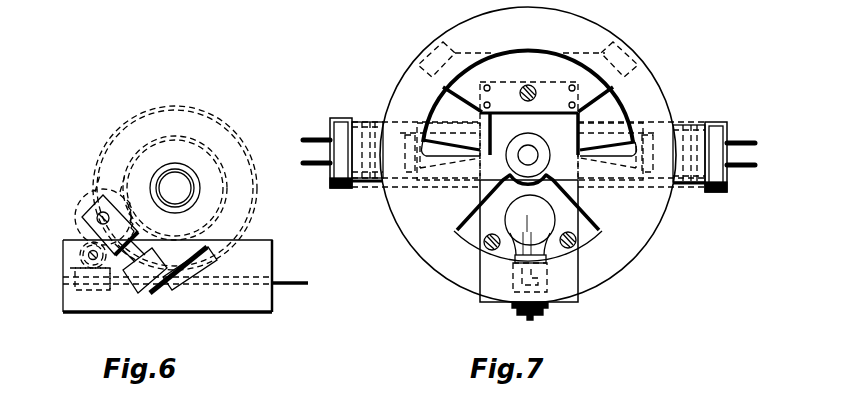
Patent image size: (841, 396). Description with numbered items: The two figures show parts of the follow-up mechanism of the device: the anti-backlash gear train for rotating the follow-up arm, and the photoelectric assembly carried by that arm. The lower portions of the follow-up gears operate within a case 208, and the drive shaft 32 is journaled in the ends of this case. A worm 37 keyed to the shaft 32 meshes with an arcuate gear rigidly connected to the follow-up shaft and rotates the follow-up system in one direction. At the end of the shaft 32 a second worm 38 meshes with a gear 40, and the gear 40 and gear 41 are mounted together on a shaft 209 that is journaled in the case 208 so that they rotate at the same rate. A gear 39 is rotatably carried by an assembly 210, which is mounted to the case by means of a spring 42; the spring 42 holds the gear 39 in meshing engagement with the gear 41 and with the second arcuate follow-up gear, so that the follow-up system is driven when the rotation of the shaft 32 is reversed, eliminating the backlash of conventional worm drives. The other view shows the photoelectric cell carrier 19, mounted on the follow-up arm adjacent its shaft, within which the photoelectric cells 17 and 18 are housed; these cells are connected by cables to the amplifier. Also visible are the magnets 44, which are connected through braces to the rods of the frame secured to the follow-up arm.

In FIG. 7, the photoelectric cell 17 is at (648, 128).
In FIG. 7, the photoelectric cell 18 is at (367, 130).
In FIG. 7, the photoelectric cell carrier 19 is at (377, 190).
In FIG. 7, the magnets 44 is at (628, 65).
In FIG. 6, the shaft 32 is at (292, 288).
In FIG. 6, the worm 37 is at (190, 290).
In FIG. 6, the worm 38 is at (107, 297).
In FIG. 6, the gear 39 is at (83, 200).
In FIG. 6, the gear 40 is at (67, 240).
In FIG. 6, the gear 41 is at (89, 253).
In FIG. 6, the spring 42 is at (177, 293).
In FIG. 6, the case 208 is at (245, 303).
In FIG. 6, the shaft 209 is at (80, 265).
In FIG. 6, the assembly 210 is at (135, 297).